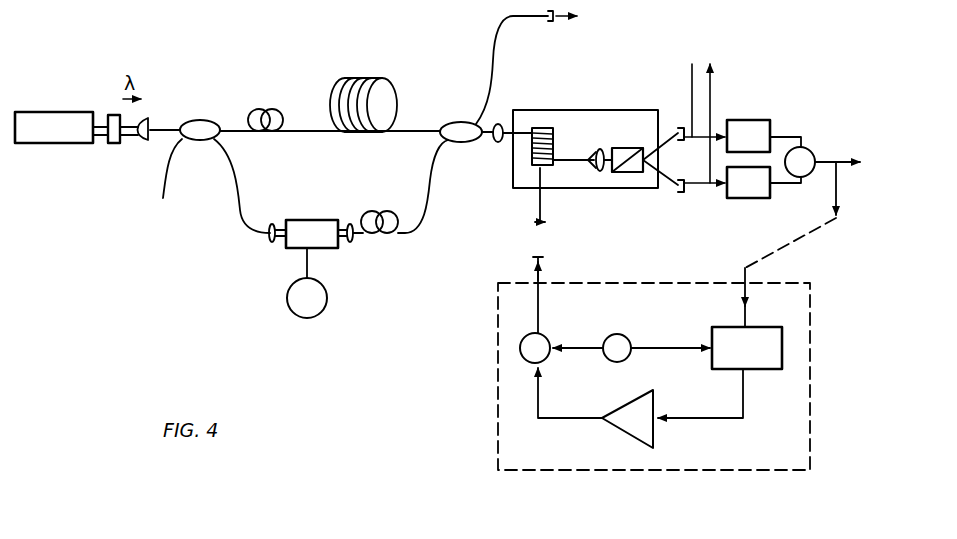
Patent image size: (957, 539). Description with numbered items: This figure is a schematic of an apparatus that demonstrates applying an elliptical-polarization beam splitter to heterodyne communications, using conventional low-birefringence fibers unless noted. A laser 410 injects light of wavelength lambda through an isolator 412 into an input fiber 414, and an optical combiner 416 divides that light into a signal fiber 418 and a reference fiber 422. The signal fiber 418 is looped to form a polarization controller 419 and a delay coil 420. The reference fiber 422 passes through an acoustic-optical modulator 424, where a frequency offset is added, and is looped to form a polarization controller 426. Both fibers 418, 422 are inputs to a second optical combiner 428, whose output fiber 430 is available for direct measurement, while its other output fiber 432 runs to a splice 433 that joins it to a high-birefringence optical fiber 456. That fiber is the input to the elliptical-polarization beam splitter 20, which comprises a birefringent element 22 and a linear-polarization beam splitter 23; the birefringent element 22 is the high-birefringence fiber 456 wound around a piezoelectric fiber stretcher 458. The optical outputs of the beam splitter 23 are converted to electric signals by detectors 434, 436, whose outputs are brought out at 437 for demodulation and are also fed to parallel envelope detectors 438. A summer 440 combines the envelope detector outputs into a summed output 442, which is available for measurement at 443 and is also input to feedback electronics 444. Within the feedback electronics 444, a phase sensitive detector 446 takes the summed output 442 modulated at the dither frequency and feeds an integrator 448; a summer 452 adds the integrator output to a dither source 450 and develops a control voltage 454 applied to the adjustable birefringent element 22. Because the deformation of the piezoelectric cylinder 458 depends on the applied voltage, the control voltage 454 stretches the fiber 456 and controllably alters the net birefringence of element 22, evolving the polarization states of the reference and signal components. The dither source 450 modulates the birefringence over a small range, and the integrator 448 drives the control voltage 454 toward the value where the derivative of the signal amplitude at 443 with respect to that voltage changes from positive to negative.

The elliptical-polarization beam splitter 20 is at (636, 134).
The birefringent element 22 is at (554, 148).
The linear-polarization beam splitter 23 is at (626, 173).
The laser 410 is at (72, 88).
The isolator 412 is at (110, 143).
The input fiber 414 is at (178, 124).
The optical combiner 416 is at (165, 183).
The signal fiber 418 is at (245, 133).
The polarization controller 419 is at (263, 110).
The delay coil 420 is at (385, 52).
The reference fiber 422 is at (238, 213).
The acoustic-optical modulator 424 is at (290, 249).
The polarization controller 426 is at (385, 236).
The optical combiner 428 is at (458, 122).
The output fiber 430 is at (549, 65).
The output fiber 432 is at (480, 142).
The splice 433 is at (497, 145).
The detector 434 is at (680, 127).
The detector 436 is at (684, 191).
The detector outputs 437 is at (716, 88).
The envelope detectors 438 is at (772, 128).
The summer 440 is at (815, 152).
The summed output 442 is at (838, 190).
The measurement output 443 is at (843, 160).
The feedback electronics 444 is at (812, 310).
The phase sensitive detector 446 is at (768, 327).
The integrator 448 is at (630, 402).
The dither source 450 is at (630, 340).
The summer 452 is at (520, 353).
The control voltage 454 is at (538, 250).
The high-birefringence optical fiber 456 is at (528, 135).
The piezoelectric fiber stretcher 458 is at (547, 128).